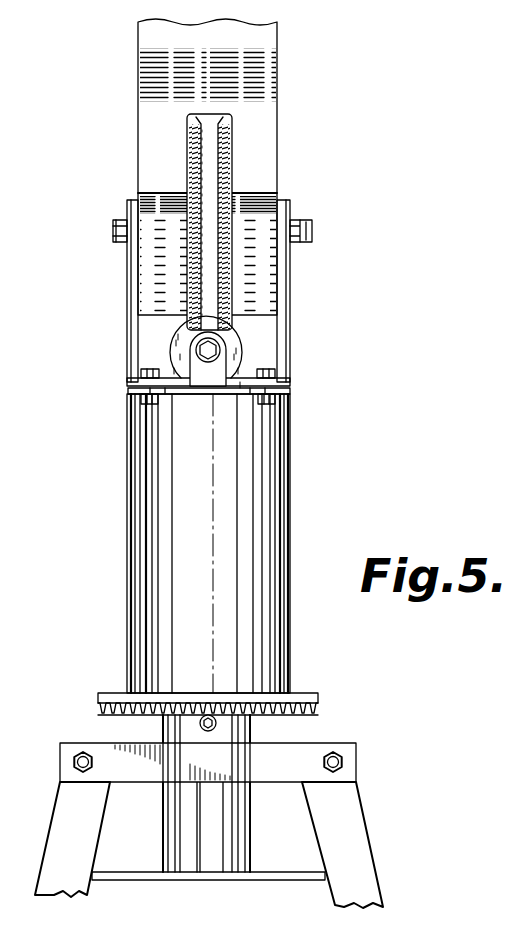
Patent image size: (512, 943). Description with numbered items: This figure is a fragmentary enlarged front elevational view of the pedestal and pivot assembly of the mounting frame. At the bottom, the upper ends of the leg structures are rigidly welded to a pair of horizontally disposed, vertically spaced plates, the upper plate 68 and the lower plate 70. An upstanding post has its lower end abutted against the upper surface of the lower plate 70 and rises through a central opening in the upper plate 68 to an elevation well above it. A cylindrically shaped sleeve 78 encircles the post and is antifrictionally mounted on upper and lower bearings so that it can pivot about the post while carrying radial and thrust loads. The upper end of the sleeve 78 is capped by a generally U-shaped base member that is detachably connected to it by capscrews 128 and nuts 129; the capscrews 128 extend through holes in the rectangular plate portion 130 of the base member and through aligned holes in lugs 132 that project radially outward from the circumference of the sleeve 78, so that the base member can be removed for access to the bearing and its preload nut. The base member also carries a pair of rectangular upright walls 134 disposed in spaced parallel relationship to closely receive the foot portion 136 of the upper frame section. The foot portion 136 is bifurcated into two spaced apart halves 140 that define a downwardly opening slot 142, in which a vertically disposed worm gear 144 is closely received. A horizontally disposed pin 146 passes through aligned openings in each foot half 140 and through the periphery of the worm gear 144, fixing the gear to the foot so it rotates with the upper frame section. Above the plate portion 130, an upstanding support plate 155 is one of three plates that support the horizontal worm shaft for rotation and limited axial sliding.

The foot portion 136 is at (260, 98).
The foot halves 140 is at (160, 150).
The slot 142 is at (205, 122).
The worm gear 144 is at (186, 156).
The pin 146 is at (115, 229).
The upright walls 134 is at (130, 285).
The plate portion 130 is at (283, 380).
The support plate 155 is at (210, 374).
The capscrews 128 is at (148, 370).
The lugs 132 is at (130, 391).
The nuts 129 is at (145, 399).
The sleeve 78 is at (290, 520).
The upper plate 68 is at (307, 743).
The lower plate 70 is at (262, 880).